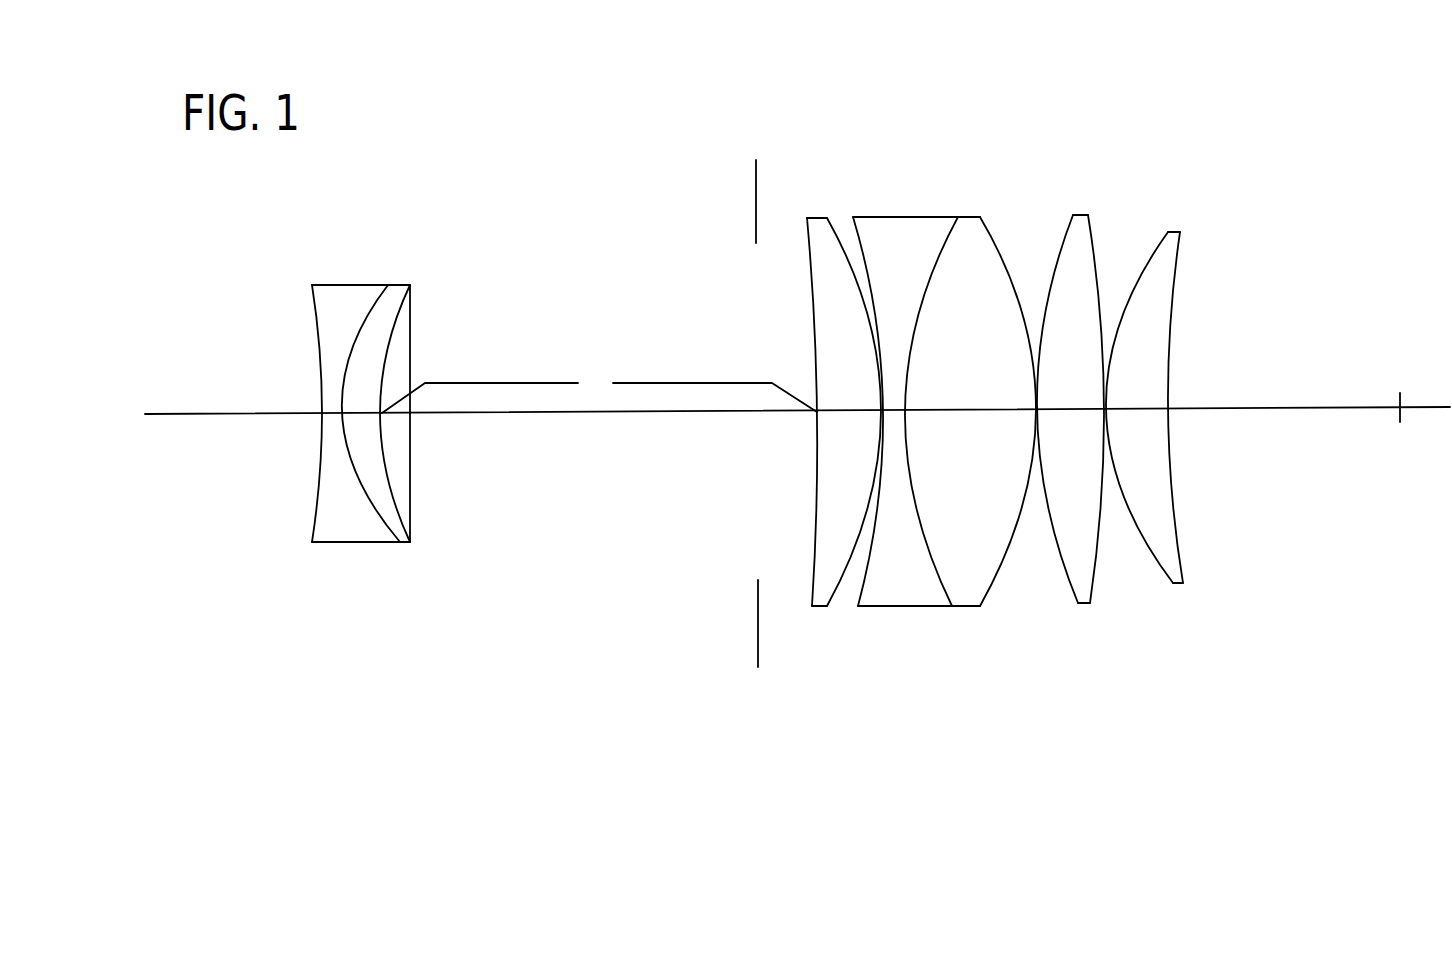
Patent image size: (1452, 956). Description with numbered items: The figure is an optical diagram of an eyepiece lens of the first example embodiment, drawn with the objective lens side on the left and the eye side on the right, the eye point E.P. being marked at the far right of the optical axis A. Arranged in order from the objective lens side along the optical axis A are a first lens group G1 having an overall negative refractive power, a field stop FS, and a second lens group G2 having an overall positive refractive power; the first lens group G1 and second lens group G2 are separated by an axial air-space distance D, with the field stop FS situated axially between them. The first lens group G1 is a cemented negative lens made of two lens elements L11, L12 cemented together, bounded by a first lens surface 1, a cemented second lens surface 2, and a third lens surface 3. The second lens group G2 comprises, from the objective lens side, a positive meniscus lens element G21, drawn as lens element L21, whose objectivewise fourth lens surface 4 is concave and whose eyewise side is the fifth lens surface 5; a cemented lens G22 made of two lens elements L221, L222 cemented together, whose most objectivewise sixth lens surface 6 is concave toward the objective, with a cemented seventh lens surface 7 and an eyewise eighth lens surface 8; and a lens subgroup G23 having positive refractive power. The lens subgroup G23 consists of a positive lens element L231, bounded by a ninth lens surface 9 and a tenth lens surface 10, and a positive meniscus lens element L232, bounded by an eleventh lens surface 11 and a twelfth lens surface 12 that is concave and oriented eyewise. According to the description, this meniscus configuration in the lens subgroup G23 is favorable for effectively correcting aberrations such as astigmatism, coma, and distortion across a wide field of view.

The optical axis A is at (195, 413).
The eye point E.P. is at (1400, 390).
The axial air-space distance D is at (599, 390).
The field stop FS is at (757, 628).
The first lens group G1 is at (412, 259).
The second lens group G2 is at (1192, 85).
The positive meniscus lens element G21 is at (818, 223).
The cemented lens G22 is at (1007, 151).
The lens subgroup G23 is at (1192, 151).
The lens element L11 is at (352, 447).
The lens element L12 is at (425, 444).
The positive meniscus lens element L21 is at (783, 412).
The lens element L221 is at (877, 468).
The lens element L222 is at (992, 437).
The positive lens element L231 is at (1083, 447).
The positive meniscus lens element L232 is at (1193, 439).
The lens surface 1 is at (315, 512).
The lens surface 2 is at (353, 463).
The lens surface 3 is at (403, 517).
The lens surface 4 is at (812, 567).
The lens surface 5 is at (860, 533).
The lens surface 6 is at (856, 594).
The lens surface 7 is at (950, 590).
The lens surface 8 is at (1000, 563).
The lens surface 9 is at (1060, 562).
The lens surface 10 is at (1093, 568).
The lens surface 11 is at (1157, 572).
The lens surface 12 is at (1170, 478).